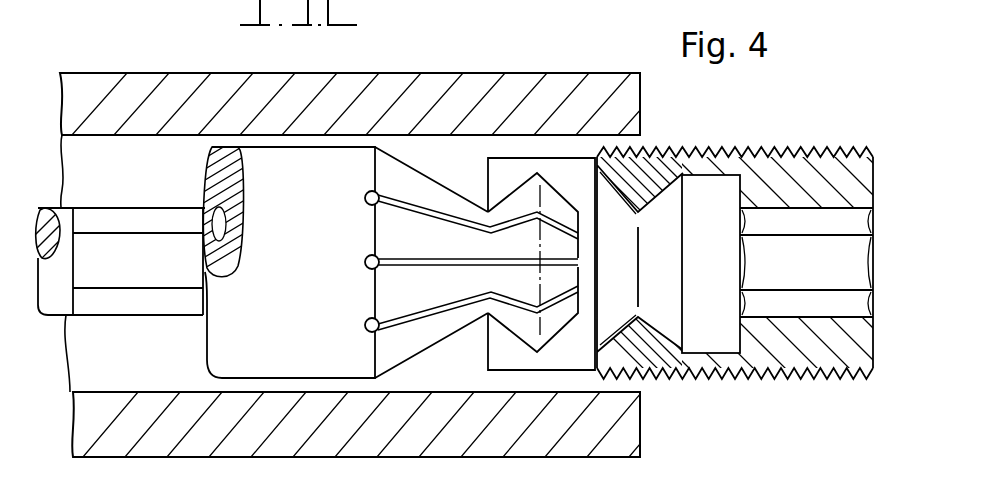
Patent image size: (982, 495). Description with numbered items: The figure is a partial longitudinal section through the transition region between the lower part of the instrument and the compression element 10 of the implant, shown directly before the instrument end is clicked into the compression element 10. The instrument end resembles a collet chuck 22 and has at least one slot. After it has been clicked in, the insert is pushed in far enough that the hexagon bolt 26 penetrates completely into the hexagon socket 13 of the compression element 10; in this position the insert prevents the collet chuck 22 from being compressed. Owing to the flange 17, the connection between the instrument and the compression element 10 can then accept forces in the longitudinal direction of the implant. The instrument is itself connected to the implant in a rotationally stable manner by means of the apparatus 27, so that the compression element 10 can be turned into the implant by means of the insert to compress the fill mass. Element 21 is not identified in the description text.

The compression element 10 is at (790, 180).
The hexagon socket 13 is at (832, 268).
The flange 17 is at (641, 210).
The housing 21 is at (182, 83).
The collet chuck 22 is at (460, 192).
The hexagon bolt 26 is at (143, 257).
The apparatus 27 is at (640, 73).